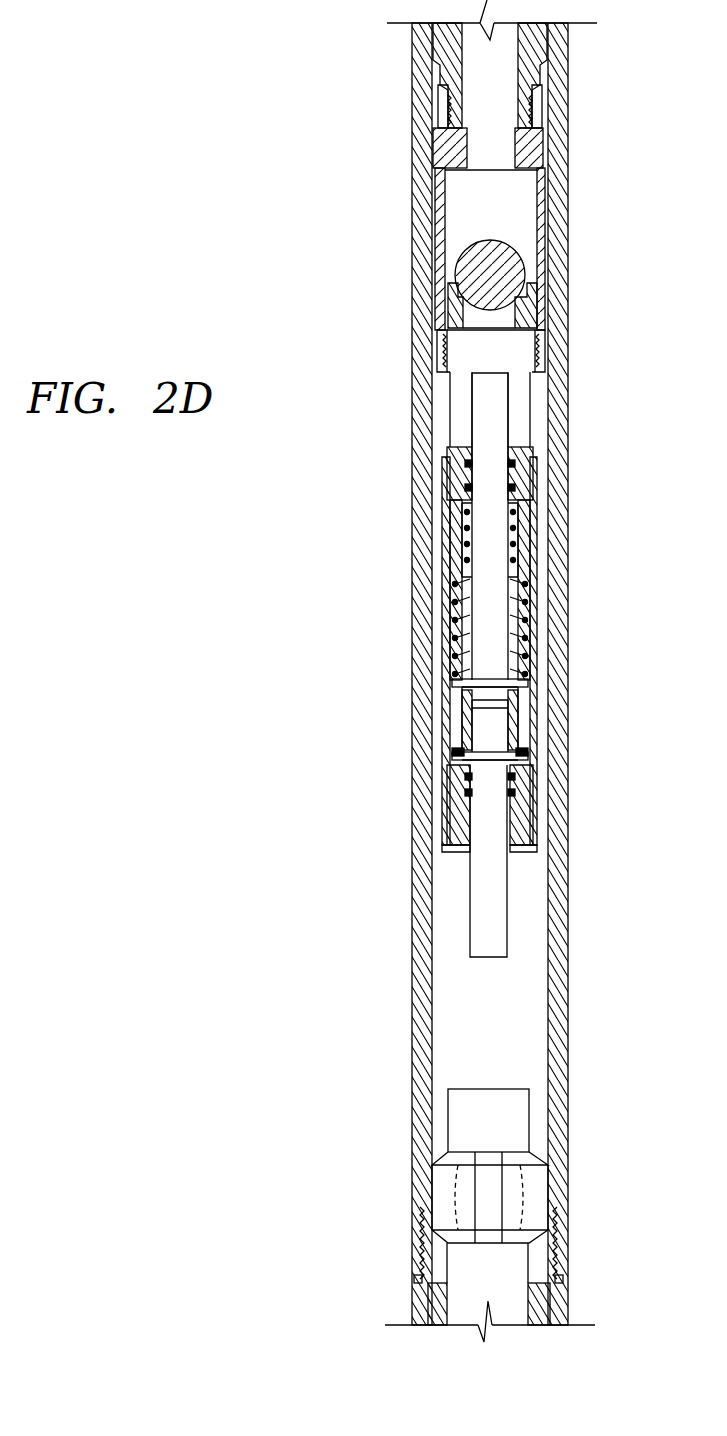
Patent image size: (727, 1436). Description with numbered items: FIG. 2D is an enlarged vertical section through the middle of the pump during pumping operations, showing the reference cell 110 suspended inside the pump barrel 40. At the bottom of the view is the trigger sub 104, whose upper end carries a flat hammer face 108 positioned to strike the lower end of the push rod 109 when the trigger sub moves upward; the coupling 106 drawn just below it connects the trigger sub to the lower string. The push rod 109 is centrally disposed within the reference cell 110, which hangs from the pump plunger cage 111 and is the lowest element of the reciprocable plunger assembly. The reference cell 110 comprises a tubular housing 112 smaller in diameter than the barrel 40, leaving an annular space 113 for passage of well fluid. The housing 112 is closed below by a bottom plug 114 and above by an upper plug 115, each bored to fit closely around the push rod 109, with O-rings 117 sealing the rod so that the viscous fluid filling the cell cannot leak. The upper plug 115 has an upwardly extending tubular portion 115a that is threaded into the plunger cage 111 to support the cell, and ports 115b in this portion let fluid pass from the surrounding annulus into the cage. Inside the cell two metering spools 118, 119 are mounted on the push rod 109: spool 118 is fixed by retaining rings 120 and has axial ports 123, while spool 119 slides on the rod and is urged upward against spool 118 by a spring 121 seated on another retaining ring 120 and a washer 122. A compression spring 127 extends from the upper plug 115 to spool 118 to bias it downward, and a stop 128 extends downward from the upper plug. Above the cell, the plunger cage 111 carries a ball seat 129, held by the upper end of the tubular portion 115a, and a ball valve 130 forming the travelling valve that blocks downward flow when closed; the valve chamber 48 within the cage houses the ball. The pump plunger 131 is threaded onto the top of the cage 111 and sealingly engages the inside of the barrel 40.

The pump barrel 40 is at (568, 108).
The pump plunger 131 is at (546, 31).
The pump plunger cage 111 is at (522, 148).
The valve chamber housing 48 is at (490, 185).
The ball valve 130 is at (510, 250).
The ball seat 129 is at (535, 308).
The tubular portion 115a is at (533, 375).
The ports 115b is at (533, 432).
The upper plug 115 is at (525, 460).
The O-rings 117 is at (520, 488).
The annular space 113 is at (542, 517).
The stop 128 is at (525, 548).
The tubular housing 112 is at (535, 575).
The reference cell 110 is at (540, 603).
The compression spring 127 is at (525, 635).
The retaining rings 120 is at (528, 680).
The metering spool 118 is at (525, 697).
The axial ports 123 is at (520, 712).
The metering spool 119 is at (515, 740).
The spring 121 is at (466, 757).
The washer 122 is at (512, 762).
The bottom plug 114 is at (525, 836).
The push rod 109 is at (490, 932).
The hammer face 108 is at (500, 1090).
The hex coupling 106 is at (518, 1160).
The trigger sub 104 is at (515, 1305).